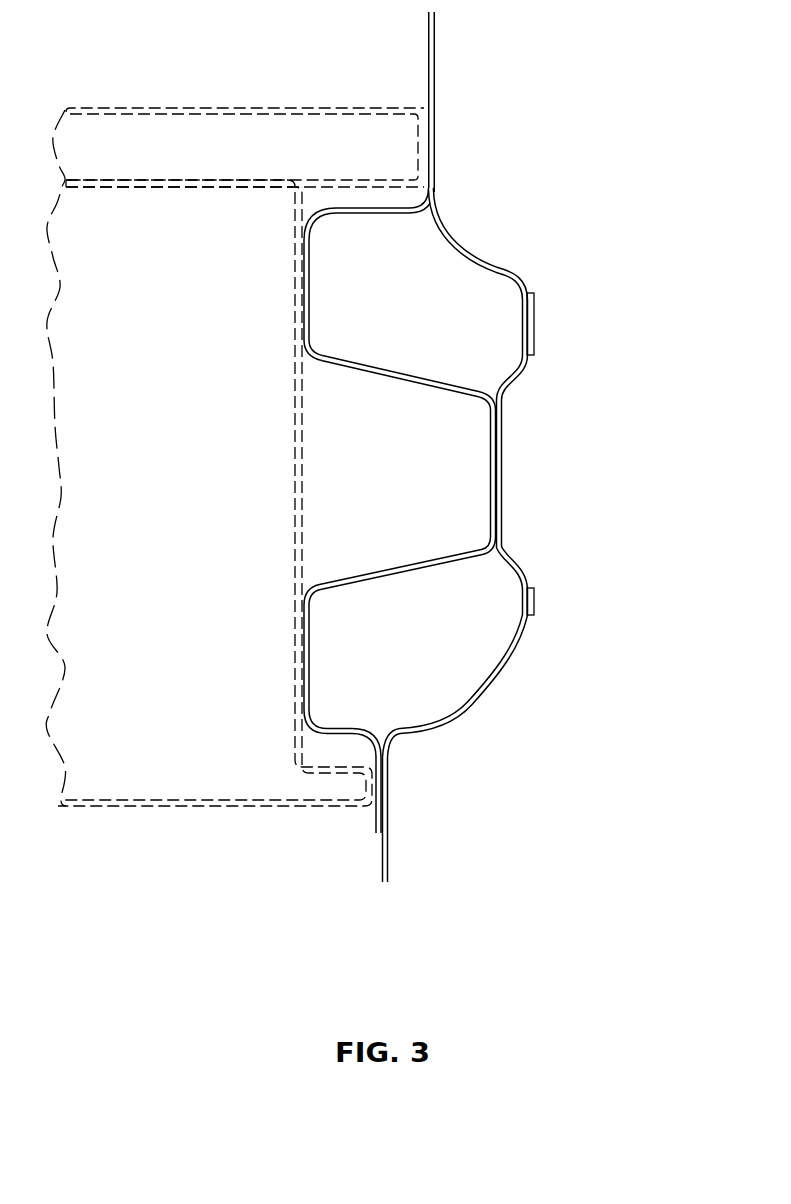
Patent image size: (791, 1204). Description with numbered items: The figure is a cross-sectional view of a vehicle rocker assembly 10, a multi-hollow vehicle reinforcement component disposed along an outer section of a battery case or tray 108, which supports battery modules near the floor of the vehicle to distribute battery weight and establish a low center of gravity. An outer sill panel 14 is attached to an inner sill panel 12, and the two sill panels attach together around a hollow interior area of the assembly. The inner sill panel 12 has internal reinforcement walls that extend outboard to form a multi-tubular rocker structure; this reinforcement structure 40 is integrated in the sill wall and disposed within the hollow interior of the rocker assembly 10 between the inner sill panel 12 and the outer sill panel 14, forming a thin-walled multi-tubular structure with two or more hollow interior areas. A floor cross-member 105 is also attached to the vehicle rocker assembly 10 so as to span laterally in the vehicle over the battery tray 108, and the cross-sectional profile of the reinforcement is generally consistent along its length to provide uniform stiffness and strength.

The vehicle rocker assembly 10 is at (479, 447).
The inner sill panel 12 is at (438, 510).
The outer sill panel 14 is at (523, 282).
The reinforcement structure 40 is at (425, 380).
The floor cross-member 105 is at (300, 98).
The battery tray 108 is at (299, 818).